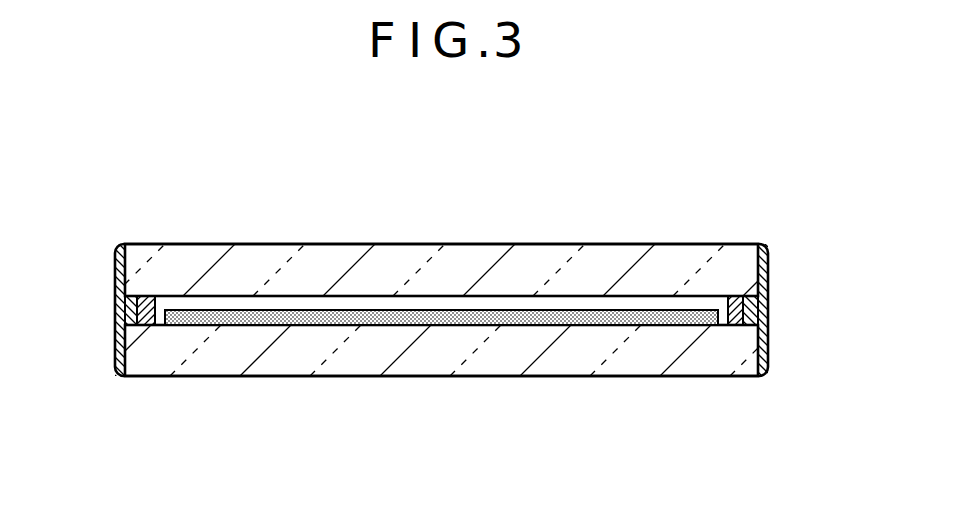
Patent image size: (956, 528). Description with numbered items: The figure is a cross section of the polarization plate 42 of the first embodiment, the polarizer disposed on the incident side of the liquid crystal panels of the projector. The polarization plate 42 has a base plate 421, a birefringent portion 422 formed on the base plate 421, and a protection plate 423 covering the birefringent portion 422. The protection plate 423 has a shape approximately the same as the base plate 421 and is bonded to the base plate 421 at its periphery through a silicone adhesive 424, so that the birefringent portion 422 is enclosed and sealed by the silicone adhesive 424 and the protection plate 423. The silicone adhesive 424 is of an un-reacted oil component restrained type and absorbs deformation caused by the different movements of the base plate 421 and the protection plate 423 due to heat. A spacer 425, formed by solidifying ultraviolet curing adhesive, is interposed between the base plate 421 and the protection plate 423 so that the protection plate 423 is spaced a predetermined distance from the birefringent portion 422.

The polarization plate 42 is at (359, 390).
The base plate 421 is at (565, 360).
The birefringent portion 422 is at (442, 324).
The protection plate 423 is at (595, 258).
The silicone adhesive 424 is at (116, 316).
The spacer 425 is at (145, 320).